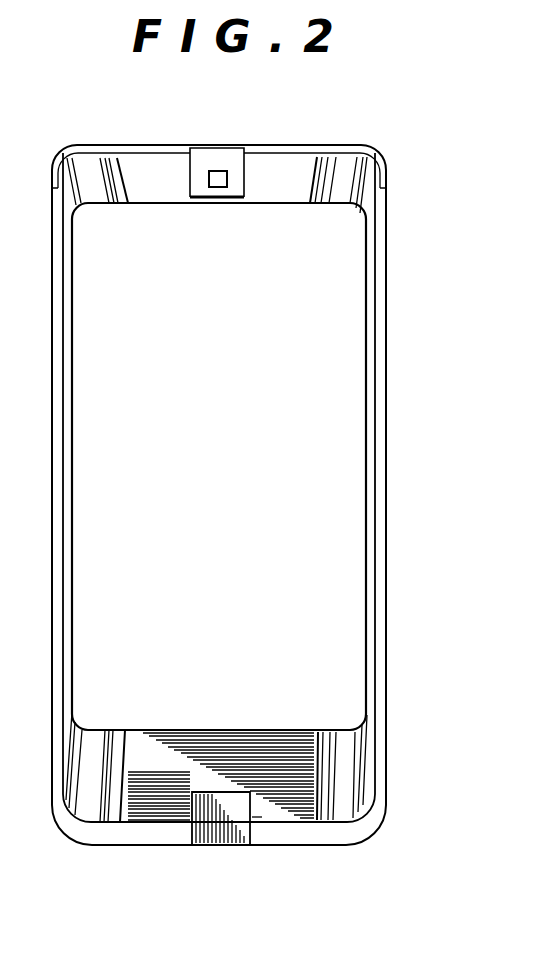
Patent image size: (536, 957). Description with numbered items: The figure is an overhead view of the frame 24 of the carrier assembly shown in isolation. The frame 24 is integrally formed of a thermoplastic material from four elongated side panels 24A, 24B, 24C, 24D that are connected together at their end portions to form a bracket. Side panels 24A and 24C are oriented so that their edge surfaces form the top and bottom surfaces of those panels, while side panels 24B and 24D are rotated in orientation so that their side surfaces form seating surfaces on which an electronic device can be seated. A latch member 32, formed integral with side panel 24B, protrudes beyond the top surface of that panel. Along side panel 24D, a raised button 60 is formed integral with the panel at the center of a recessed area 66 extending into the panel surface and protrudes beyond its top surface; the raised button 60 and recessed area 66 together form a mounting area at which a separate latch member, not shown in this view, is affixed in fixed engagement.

The frame 24 is at (331, 123).
The side panel 24A is at (63, 318).
The side panel 24B is at (292, 833).
The side panel 24C is at (378, 335).
The side panel 24D is at (128, 175).
The raised button 60 is at (219, 171).
The recessed area 66 is at (235, 167).
The latch member 32 is at (215, 826).